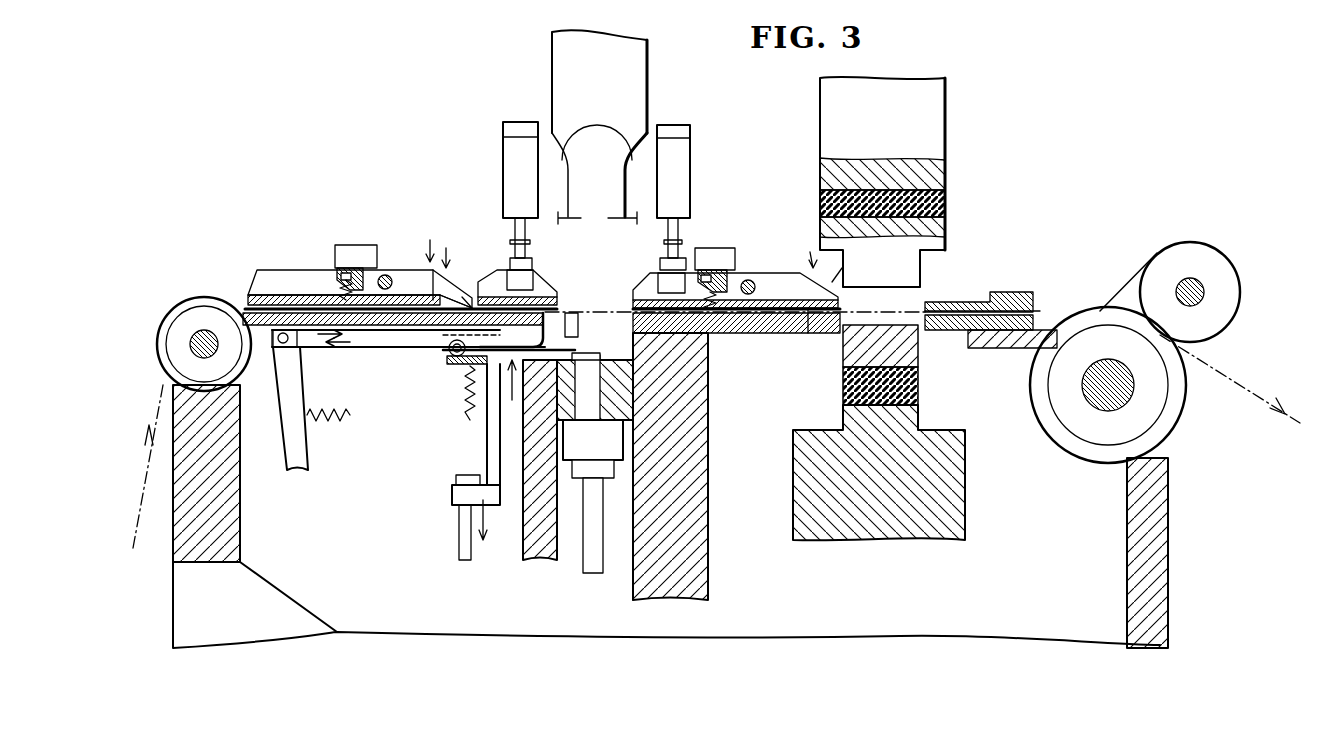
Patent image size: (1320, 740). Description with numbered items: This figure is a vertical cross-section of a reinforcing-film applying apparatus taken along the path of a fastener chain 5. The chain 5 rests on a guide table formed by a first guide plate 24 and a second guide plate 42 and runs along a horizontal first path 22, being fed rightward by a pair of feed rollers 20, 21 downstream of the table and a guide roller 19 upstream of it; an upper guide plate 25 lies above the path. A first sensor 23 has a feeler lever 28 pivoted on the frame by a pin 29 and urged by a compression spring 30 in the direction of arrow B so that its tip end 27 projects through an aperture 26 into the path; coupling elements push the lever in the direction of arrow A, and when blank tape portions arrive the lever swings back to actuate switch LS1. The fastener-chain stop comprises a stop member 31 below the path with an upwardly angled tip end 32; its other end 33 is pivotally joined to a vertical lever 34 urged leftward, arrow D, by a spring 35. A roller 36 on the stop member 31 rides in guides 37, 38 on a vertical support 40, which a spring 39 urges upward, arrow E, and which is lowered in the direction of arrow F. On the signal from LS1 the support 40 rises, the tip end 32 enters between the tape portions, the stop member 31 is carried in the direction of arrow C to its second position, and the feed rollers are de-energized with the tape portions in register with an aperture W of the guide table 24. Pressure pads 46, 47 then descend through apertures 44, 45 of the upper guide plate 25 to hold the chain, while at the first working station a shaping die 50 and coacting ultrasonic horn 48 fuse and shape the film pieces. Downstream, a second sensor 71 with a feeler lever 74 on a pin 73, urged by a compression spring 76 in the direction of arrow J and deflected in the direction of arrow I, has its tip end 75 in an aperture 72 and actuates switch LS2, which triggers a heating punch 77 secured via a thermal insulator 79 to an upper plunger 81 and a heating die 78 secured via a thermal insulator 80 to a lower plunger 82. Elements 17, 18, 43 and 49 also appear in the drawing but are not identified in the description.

The fastener chain 5 is at (140, 500).
The tape guide member 17 is at (801, 308).
The tape guide member 18 is at (920, 300).
The guide roller 19 is at (195, 300).
The feed roller 20 is at (1172, 395).
The feed roller 21 is at (1207, 265).
The first path 22 is at (415, 325).
The first sensor 23 is at (400, 265).
The first guide plate 24 is at (385, 326).
The upper guide plate 25 is at (275, 296).
The aperture 26 is at (485, 296).
The tip end 27 is at (460, 296).
The feeler lever 28 is at (417, 268).
The pin 29 is at (386, 275).
The compression spring 30 is at (340, 285).
The stop member 31 is at (365, 348).
The upwardly angled tip end 32 is at (566, 312).
The other end 33 is at (277, 348).
The vertical lever 34 is at (290, 400).
The spring 35 is at (332, 422).
The roller 36 is at (450, 355).
The guide 37 is at (463, 366).
The guide 38 is at (560, 345).
The spring 39 is at (466, 416).
The vertical support 40 is at (458, 544).
The second guide plate 42 is at (775, 316).
The block 43 is at (662, 290).
The aperture 44 is at (530, 291).
The aperture 45 is at (668, 335).
The pressure pad 46 is at (512, 268).
The pressure pad 47 is at (674, 265).
The ultrasonic horn 48 is at (578, 150).
The support 49 is at (540, 545).
The shaping die 50 is at (617, 360).
The second sensor 71 is at (787, 254).
The aperture 72 is at (805, 312).
The pin 73 is at (735, 282).
The feeler lever 74 is at (758, 280).
The tip end 75 is at (838, 303).
The compression spring 76 is at (720, 312).
The heating punch 77 is at (930, 262).
The heating die 78 is at (920, 360).
The thermal insulator 79 is at (947, 206).
The thermal insulator 80 is at (920, 395).
The upper plunger 81 is at (890, 95).
The lower plunger 82 is at (948, 508).
The arrow A is at (433, 234).
The arrow B is at (450, 244).
The arrow C is at (320, 340).
The arrow D is at (338, 348).
The arrow E is at (509, 393).
The arrow F is at (490, 526).
The arrow I is at (805, 253).
The arrow J is at (844, 268).
The aperture W is at (597, 219).
The switch LS1 is at (352, 250).
The switch LS2 is at (712, 250).